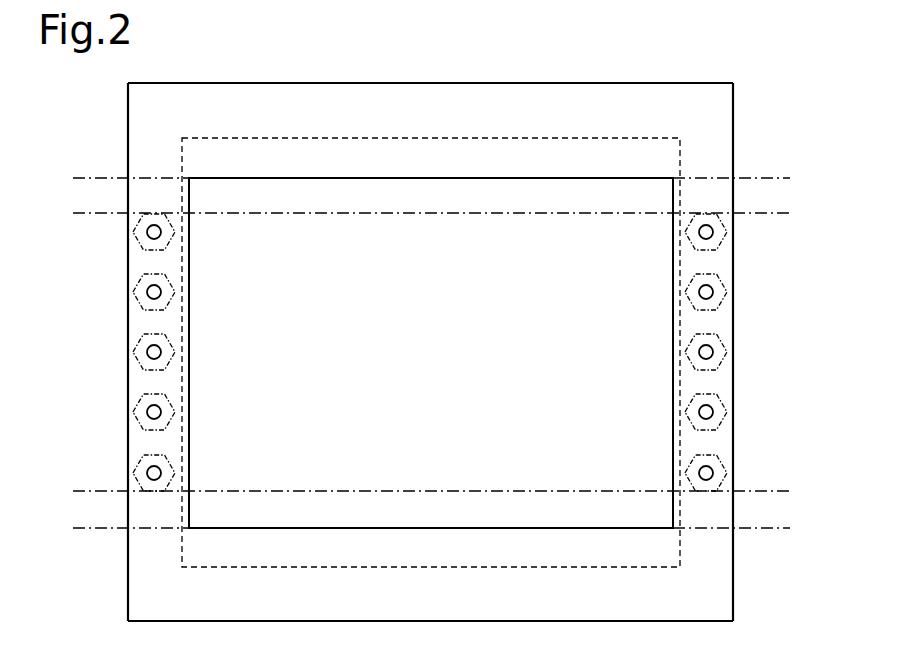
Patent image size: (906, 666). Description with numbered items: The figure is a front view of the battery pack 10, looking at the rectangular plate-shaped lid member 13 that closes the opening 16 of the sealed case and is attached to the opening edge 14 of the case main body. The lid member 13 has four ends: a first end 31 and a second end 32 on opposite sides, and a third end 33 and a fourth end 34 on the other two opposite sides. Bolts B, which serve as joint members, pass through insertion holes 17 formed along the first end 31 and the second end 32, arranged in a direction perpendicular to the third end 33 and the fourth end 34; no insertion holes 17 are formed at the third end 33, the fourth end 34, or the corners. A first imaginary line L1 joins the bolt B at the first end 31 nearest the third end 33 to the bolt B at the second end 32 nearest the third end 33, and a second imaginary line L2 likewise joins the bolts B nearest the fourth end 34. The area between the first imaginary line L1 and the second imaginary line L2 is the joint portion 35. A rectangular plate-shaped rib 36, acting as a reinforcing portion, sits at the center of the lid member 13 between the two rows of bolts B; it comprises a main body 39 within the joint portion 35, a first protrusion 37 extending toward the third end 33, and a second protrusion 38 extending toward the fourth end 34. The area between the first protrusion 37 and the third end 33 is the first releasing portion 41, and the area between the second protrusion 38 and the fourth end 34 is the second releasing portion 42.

The battery pack 10 is at (812, 115).
The lid member 13 is at (733, 618).
The opening edge 14 is at (654, 112).
The opening 16 is at (257, 145).
The insertion holes 17 is at (707, 353).
The first end 31 is at (125, 509).
The second end 32 is at (735, 510).
The third end 33 is at (460, 83).
The fourth end 34 is at (460, 621).
The joint portion 35 is at (128, 491).
The rib 36 is at (608, 528).
The first protrusion 37 is at (588, 198).
The second protrusion 38 is at (537, 510).
The main body 39 is at (648, 268).
The first releasing portion 41 is at (128, 83).
The second releasing portion 42 is at (128, 528).
The bolts B is at (718, 397).
The first imaginary line L1 is at (452, 213).
The second imaginary line L2 is at (452, 492).